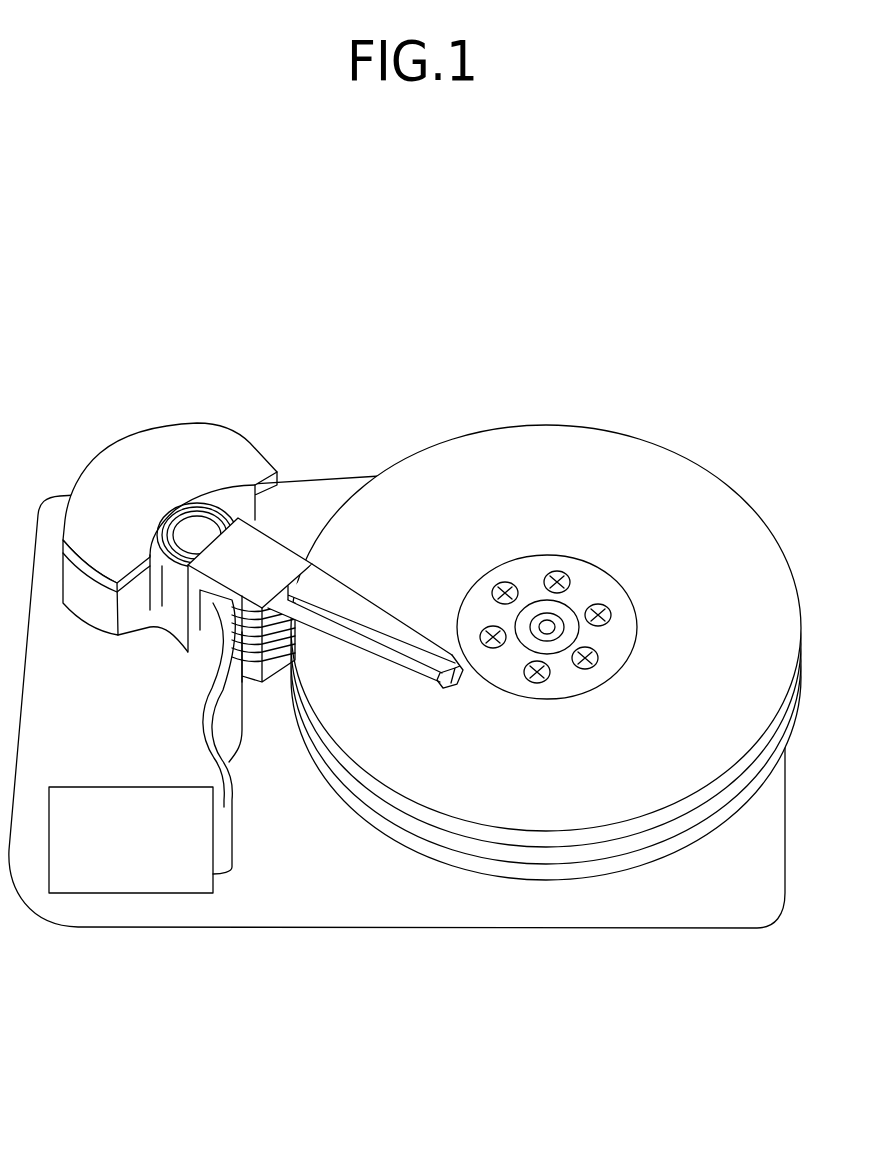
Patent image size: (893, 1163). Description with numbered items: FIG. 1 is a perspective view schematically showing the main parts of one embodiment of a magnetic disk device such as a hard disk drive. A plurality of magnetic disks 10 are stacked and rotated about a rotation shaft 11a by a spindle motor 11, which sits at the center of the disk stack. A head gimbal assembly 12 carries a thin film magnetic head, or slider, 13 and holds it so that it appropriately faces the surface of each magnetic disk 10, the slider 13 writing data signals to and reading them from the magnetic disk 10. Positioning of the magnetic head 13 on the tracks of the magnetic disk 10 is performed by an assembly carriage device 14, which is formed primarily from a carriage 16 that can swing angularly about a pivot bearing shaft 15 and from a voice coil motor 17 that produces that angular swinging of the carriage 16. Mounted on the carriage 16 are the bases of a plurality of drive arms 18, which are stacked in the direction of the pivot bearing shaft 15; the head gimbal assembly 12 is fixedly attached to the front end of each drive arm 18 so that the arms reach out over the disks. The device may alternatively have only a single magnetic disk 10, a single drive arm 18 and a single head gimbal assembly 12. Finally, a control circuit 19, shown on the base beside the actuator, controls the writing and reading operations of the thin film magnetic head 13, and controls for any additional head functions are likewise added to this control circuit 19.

The magnetic disk 10 is at (712, 474).
The spindle motor 11 is at (536, 605).
The rotation shaft 11a is at (556, 621).
The head gimbal assembly 12 is at (402, 670).
The thin film magnetic head 13 is at (456, 686).
The assembly carriage device 14 is at (198, 438).
The pivot bearing shaft 15 is at (260, 557).
The carriage 16 is at (222, 562).
The voice coil motor 17 is at (163, 600).
The drive arm 18 is at (343, 590).
The control circuit 19 is at (110, 893).